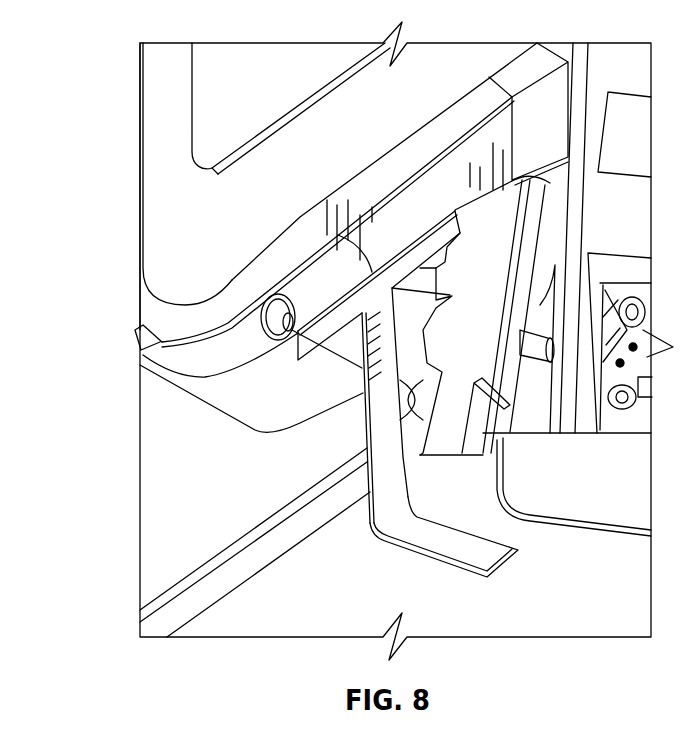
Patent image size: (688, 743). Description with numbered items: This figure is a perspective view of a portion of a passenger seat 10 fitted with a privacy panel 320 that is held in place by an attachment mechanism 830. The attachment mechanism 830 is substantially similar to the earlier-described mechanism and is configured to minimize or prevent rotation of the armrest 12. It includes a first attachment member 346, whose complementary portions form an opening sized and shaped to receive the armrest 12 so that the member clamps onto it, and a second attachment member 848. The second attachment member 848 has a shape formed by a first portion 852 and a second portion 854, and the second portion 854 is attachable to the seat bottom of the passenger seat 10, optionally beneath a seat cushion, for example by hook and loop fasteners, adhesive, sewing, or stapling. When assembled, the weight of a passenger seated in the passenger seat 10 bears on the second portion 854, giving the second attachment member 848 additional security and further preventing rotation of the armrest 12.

The passenger seat 10 is at (172, 492).
The armrest 12 is at (162, 322).
The privacy panel 320 is at (172, 106).
The first attachment member 346 is at (400, 182).
The attachment mechanism 830 is at (363, 262).
The first portion 852 is at (330, 317).
The second attachment member 848 is at (370, 426).
The second portion 854 is at (443, 540).